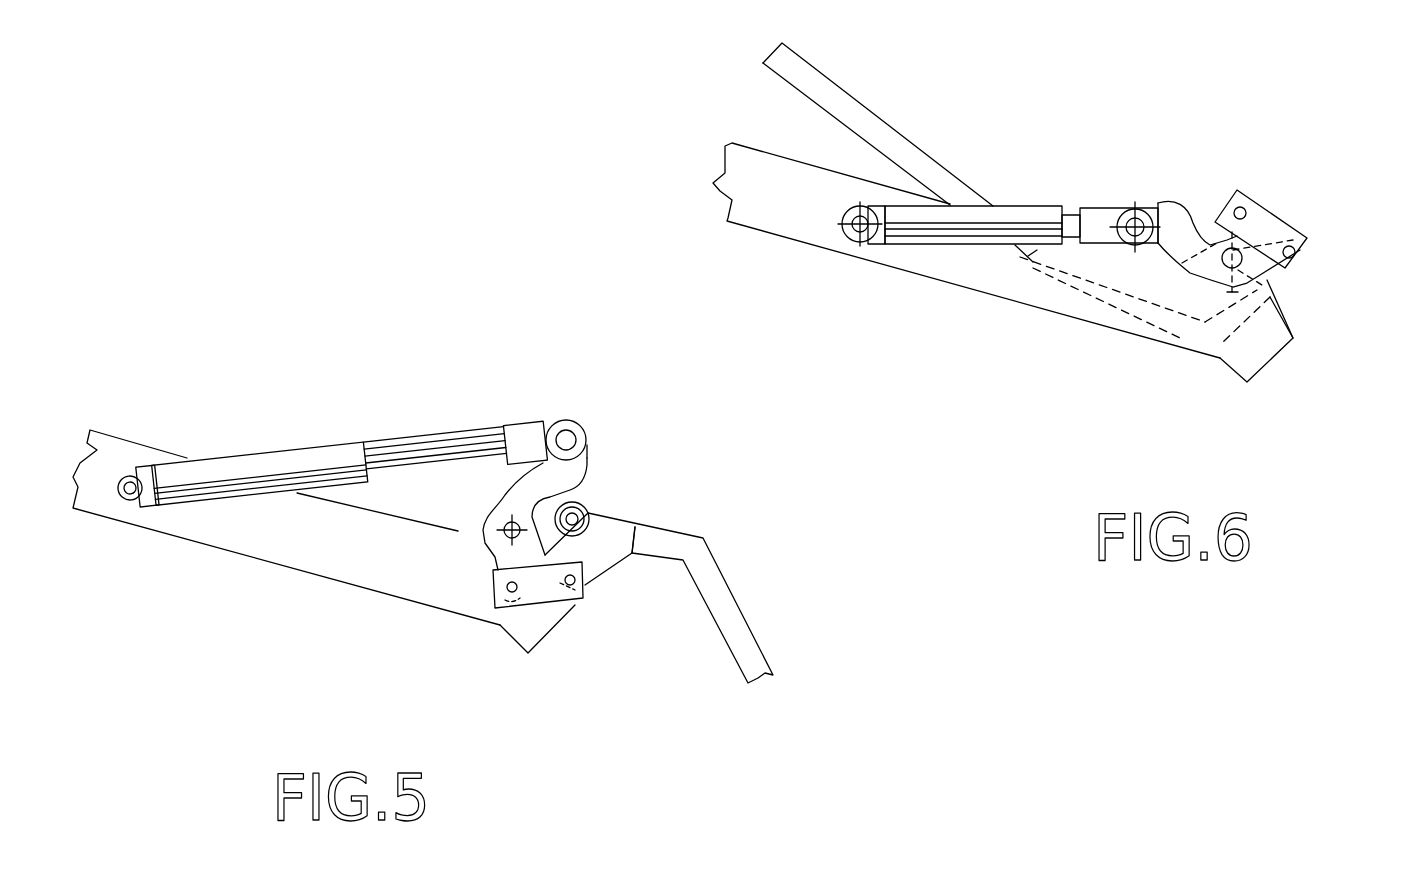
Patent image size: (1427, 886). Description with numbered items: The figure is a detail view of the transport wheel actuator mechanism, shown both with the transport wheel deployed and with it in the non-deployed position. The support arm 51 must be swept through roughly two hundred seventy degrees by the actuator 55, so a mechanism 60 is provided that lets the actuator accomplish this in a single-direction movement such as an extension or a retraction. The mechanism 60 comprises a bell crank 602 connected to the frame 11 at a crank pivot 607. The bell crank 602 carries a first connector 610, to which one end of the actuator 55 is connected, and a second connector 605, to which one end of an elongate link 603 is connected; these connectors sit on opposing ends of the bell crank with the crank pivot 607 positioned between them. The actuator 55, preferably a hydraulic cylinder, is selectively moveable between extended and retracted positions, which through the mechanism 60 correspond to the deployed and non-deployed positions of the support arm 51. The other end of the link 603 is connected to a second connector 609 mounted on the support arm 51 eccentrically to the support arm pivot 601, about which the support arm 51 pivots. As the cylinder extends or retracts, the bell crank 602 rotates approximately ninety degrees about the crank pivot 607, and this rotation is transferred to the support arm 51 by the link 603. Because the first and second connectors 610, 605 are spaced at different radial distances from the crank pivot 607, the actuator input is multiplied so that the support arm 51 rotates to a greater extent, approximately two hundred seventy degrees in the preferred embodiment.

In FIG. 5, the frame 11 is at (110, 447).
In FIG. 6, the frame 11 is at (760, 198).
In FIG. 5, the support arm 51 is at (722, 592).
In FIG. 6, the support arm 51 is at (837, 110).
In FIG. 5, the actuator 55 is at (284, 448).
In FIG. 6, the actuator 55 is at (983, 243).
In FIG. 5, the mechanism 60 is at (605, 472).
In FIG. 6, the mechanism 60 is at (1080, 137).
In FIG. 5, the support arm pivot 601 is at (590, 511).
In FIG. 5, the bell crank 602 is at (592, 450).
In FIG. 6, the bell crank 602 is at (1167, 238).
In FIG. 5, the elongate link 603 is at (543, 598).
In FIG. 6, the elongate link 603 is at (1253, 202).
In FIG. 5, the second connector 605 is at (505, 586).
In FIG. 6, the second connector 605 is at (1300, 232).
In FIG. 5, the crank pivot 607 is at (483, 537).
In FIG. 6, the crank pivot 607 is at (1278, 290).
In FIG. 5, the second connector 609 is at (587, 580).
In FIG. 6, the second connector 609 is at (1230, 204).
In FIG. 5, the first connector 610 is at (552, 428).
In FIG. 6, the first connector 610 is at (1120, 212).